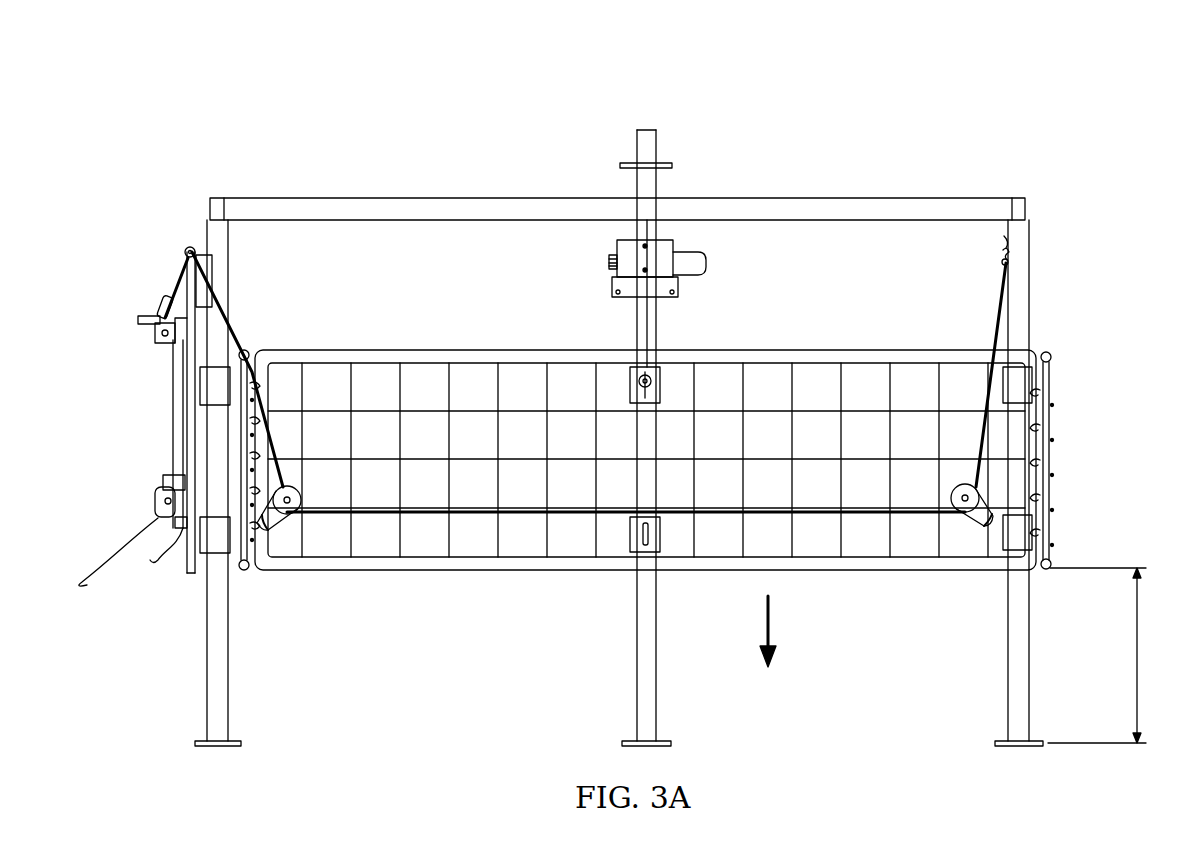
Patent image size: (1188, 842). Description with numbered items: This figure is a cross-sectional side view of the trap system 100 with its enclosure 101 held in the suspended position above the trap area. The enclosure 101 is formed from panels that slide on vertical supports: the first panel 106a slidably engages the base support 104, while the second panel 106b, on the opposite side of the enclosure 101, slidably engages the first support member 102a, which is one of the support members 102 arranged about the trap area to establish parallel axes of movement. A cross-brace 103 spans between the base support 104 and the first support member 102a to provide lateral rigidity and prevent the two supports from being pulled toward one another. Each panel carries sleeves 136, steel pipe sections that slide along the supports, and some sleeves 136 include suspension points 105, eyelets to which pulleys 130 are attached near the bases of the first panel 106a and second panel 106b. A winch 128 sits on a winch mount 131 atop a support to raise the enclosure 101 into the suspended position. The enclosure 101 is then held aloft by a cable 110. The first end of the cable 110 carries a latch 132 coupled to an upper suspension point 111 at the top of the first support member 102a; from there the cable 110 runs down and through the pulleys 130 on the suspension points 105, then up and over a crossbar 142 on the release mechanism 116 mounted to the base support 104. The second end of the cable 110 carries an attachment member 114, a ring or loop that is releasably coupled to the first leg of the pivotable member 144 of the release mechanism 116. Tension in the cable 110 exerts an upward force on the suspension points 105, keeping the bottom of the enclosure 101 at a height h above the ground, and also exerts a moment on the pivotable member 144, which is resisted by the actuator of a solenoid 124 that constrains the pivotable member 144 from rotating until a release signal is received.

The trap system 100 is at (880, 88).
The enclosure 101 is at (340, 322).
The support members 102 is at (637, 680).
The first support member 102a is at (1008, 680).
The cross-brace 103 is at (410, 198).
The base support 104 is at (207, 680).
The suspension points 105 is at (660, 392).
The first panel 106a is at (470, 348).
The second panel 106b is at (1055, 440).
The cable 110 is at (470, 515).
The upper suspension point 111 is at (1003, 258).
The attachment member 114 is at (160, 303).
The release mechanism 116 is at (125, 350).
The solenoid 124 is at (158, 498).
The winch 128 is at (680, 262).
The pulleys 130 is at (280, 530).
The winch mount 131 is at (660, 240).
The latch 132 is at (1003, 262).
The sleeves 136 is at (630, 382).
The crossbar 142 is at (190, 247).
The pivotable member 144 is at (175, 420).